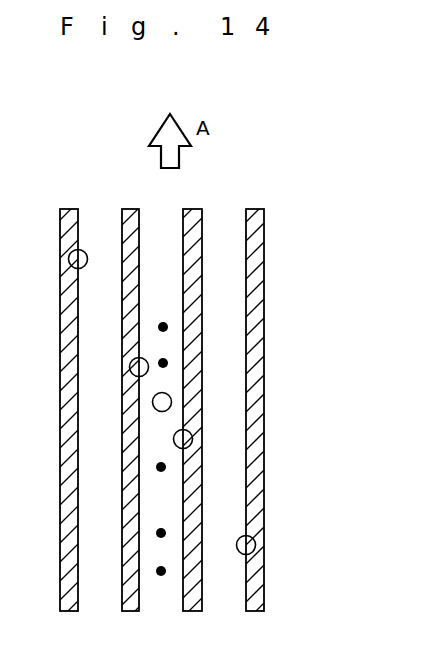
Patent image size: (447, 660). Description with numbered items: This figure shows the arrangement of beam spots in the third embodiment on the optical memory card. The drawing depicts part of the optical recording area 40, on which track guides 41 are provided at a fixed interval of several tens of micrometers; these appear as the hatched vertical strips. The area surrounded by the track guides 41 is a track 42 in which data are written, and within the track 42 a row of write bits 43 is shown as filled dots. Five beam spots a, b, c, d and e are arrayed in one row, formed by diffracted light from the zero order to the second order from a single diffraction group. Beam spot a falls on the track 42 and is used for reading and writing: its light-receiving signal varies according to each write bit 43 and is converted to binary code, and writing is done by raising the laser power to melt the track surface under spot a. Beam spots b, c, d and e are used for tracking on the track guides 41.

The developing device / electrode assembly 40 is at (230, 198).
The first electrode plate 41 is at (55, 325).
The second electrode plate 42 is at (227, 235).
The toner particles 43 is at (164, 325).